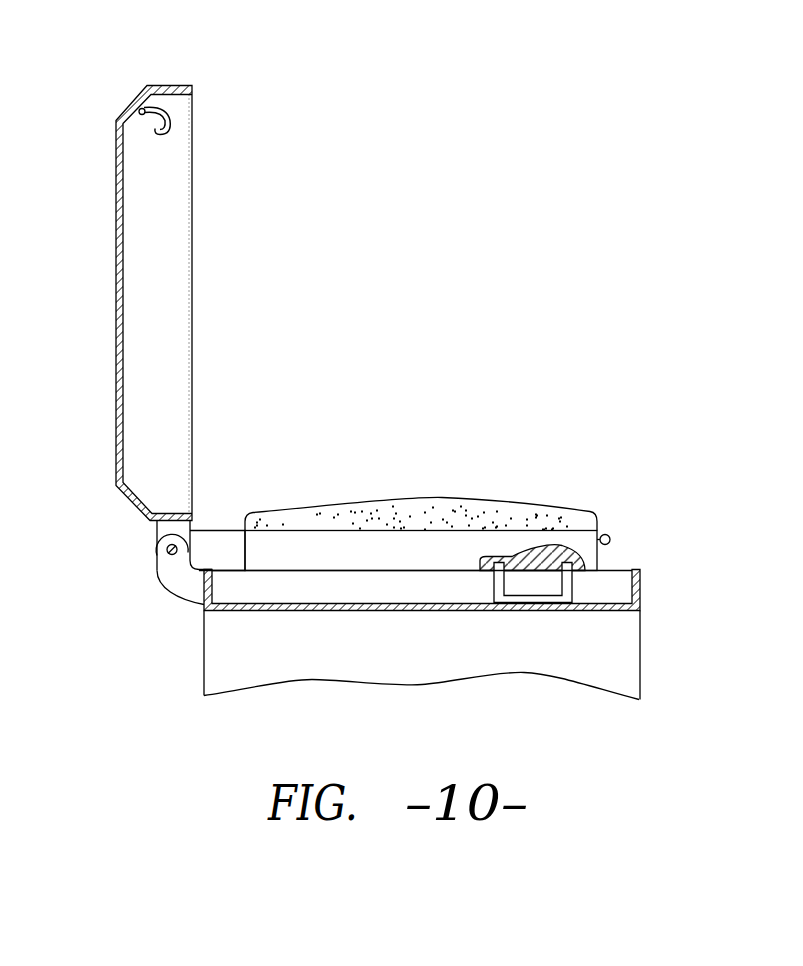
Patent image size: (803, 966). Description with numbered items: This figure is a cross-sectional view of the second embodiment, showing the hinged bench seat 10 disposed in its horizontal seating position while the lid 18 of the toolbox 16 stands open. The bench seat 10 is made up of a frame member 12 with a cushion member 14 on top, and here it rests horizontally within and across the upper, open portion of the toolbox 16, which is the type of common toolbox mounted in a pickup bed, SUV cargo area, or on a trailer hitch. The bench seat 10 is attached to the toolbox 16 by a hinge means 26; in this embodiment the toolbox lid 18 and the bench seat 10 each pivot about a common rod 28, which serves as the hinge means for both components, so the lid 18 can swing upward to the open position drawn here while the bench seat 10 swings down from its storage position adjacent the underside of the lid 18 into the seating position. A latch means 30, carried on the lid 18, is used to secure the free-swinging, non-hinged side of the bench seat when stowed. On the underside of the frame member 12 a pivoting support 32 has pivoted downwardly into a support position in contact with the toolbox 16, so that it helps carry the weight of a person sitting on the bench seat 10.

The bench seat 10 is at (556, 508).
The frame member 12 is at (458, 543).
The cushion member 14 is at (396, 514).
The toolbox 16 is at (640, 647).
The hinged lid 18 is at (135, 103).
The hinge means 26 is at (224, 548).
The common rod 28 is at (162, 553).
The latch means 30 is at (165, 103).
The pivoting supports 32 is at (588, 587).